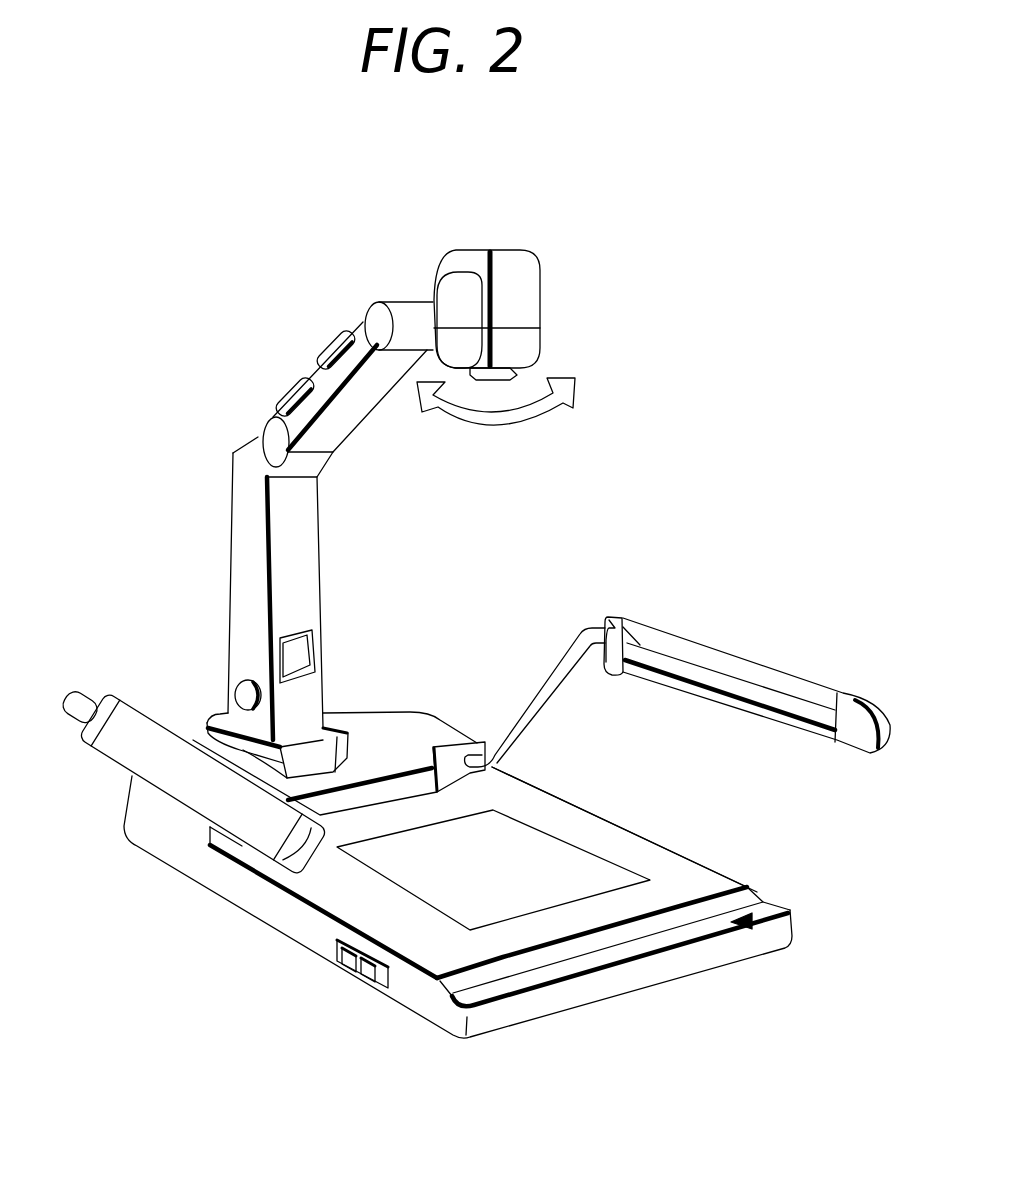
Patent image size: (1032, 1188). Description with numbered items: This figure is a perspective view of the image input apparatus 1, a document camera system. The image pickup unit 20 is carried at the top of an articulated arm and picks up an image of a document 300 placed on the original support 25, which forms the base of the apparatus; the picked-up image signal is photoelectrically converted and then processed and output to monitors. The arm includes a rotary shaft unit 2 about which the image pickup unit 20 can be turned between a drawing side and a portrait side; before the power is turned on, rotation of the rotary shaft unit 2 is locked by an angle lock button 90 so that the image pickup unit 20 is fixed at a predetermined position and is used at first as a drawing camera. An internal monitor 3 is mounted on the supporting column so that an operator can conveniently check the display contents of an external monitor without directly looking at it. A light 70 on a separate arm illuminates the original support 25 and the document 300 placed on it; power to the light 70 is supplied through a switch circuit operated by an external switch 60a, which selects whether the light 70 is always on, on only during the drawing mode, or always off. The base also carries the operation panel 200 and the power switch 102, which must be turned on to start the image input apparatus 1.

The image input apparatus 1 is at (662, 483).
The rotary shaft unit 2 is at (375, 313).
The internal monitor 3 is at (297, 652).
The image pickup unit 20 is at (532, 320).
The original support (base) 25 is at (697, 877).
The external switch 60a is at (368, 965).
The light 70 is at (687, 635).
The angle lock button 90 is at (333, 348).
The power switch 102 is at (347, 960).
The operation panel 200 is at (775, 923).
The document 300 is at (543, 853).